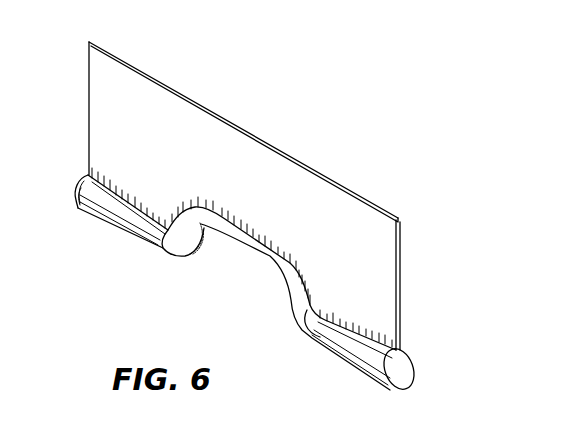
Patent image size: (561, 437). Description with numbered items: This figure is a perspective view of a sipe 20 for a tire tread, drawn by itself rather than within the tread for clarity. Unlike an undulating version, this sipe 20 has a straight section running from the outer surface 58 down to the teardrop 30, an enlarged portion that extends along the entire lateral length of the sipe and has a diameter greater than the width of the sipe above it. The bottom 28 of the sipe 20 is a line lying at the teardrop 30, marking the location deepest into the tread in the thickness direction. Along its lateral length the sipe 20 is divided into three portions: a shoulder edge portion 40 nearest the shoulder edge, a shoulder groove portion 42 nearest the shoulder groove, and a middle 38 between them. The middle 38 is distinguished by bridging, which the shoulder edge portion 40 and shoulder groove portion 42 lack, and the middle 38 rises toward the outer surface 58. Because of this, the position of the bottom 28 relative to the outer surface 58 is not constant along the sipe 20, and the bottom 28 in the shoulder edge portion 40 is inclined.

The sipe 20 is at (388, 131).
The bottom 28 is at (408, 383).
The teardrop 30 is at (275, 298).
The middle 38 is at (240, 187).
The shoulder edge portion 40 is at (378, 265).
The shoulder groove portion 42 is at (98, 98).
The outer surface 58 is at (167, 85).